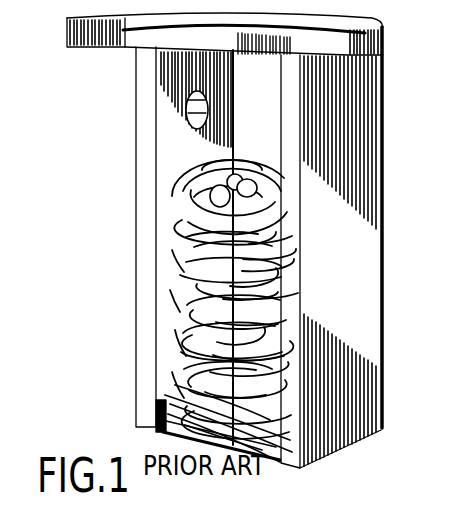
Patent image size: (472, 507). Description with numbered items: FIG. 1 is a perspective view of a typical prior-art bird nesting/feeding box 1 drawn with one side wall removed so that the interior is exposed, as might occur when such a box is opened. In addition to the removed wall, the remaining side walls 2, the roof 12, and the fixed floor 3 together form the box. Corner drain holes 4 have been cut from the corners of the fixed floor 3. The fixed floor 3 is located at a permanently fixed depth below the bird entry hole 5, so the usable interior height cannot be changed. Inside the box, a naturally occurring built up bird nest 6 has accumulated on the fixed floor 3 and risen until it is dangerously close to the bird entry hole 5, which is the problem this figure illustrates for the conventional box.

The nesting/feeding box 1 is at (389, 12).
The side walls 2 is at (262, 143).
The fixed floor 3 is at (150, 437).
The corner drain holes 4 is at (162, 418).
The bird entry hole 5 is at (236, 128).
The built up bird nest 6 is at (177, 313).
The roof 12 is at (141, 52).